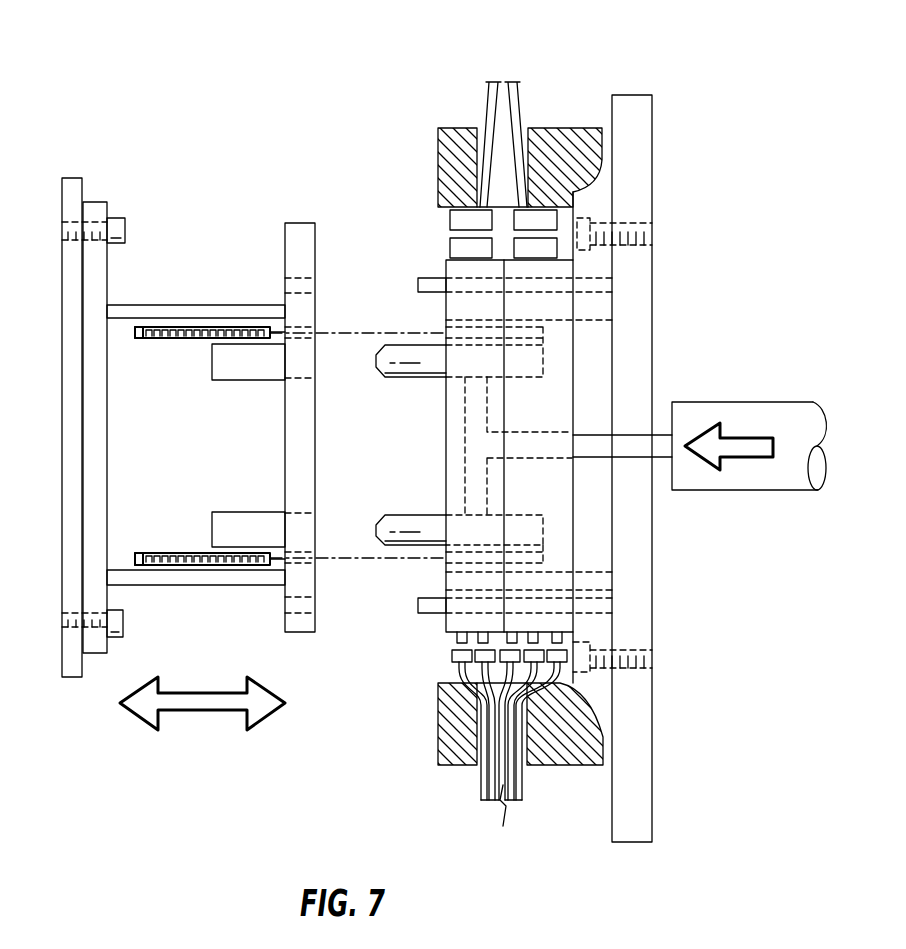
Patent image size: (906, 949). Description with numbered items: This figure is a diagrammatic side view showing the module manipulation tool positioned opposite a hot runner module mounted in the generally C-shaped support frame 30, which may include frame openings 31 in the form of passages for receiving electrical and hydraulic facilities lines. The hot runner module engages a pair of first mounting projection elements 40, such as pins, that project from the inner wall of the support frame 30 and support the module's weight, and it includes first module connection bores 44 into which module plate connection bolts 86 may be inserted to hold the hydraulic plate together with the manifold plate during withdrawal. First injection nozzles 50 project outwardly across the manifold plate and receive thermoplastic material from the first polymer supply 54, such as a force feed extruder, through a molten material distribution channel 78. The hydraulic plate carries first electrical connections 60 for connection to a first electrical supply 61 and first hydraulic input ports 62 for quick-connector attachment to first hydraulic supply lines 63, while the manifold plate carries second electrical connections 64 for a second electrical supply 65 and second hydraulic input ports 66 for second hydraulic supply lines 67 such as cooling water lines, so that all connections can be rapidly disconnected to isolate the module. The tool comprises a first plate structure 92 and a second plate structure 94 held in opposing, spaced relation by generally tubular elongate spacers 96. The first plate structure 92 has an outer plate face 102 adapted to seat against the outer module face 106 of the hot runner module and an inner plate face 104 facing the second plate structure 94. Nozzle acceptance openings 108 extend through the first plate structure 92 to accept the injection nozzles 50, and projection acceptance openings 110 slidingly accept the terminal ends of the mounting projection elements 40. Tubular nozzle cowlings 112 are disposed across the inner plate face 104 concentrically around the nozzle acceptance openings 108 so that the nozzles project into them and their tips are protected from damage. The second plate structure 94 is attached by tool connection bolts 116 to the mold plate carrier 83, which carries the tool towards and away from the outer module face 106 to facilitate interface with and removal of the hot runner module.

The support frame 30 is at (560, 128).
The frame openings 31 is at (520, 135).
The first mounting projection elements 40 is at (418, 285).
The first module connection bores 44 is at (543, 333).
The first injection nozzles 50 is at (420, 515).
The first polymer supply 54 is at (810, 402).
The first electrical connections 60 is at (557, 248).
The first electrical supply 61 is at (557, 220).
The first hydraulic input ports 62 is at (562, 637).
The first hydraulic supply lines 63 is at (557, 668).
The second electrical connections 64 is at (450, 248).
The second electrical supply 65 is at (450, 220).
The second hydraulic input ports 66 is at (453, 641).
The second hydraulic supply lines 67 is at (535, 744).
The molten material distribution channel 78 is at (487, 400).
The mold plate carrier 83 is at (70, 178).
The module plate connection bolts 86 is at (135, 332).
The first plate structure 92 is at (300, 223).
The second plate structure 94 is at (97, 202).
The elongate spacers 96 is at (183, 305).
The outer plate face 102 is at (325, 483).
The inner plate face 104 is at (285, 405).
The outer module face 106 is at (446, 425).
The nozzle acceptance openings 108 is at (315, 362).
The projection acceptance openings 110 is at (285, 285).
The nozzle cowlings 112 is at (225, 445).
The tool connection bolts 116 is at (120, 218).